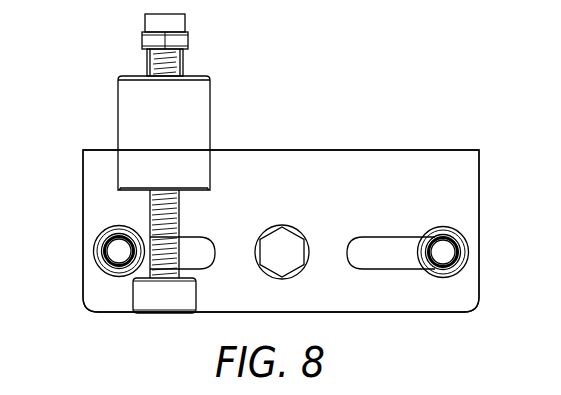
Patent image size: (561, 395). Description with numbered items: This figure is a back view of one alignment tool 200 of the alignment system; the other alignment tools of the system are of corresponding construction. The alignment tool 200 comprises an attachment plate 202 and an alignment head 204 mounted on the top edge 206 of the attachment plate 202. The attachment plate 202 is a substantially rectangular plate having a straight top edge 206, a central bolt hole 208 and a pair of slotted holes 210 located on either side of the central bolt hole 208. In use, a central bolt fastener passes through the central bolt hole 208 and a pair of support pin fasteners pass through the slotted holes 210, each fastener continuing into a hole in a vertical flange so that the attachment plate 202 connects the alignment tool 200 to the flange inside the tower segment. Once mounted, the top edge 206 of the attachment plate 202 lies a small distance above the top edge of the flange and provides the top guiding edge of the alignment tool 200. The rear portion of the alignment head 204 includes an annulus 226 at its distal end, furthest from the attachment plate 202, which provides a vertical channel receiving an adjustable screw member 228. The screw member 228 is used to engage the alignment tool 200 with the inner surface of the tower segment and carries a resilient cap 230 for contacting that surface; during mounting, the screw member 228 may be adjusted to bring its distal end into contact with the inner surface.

The alignment tool 200 is at (422, 80).
The attachment plate 202 is at (351, 150).
The alignment head 204 is at (224, 93).
The top edge 206 is at (457, 149).
The central bolt hole 208 is at (282, 238).
The slotted holes 210 is at (207, 257).
The annulus 226 is at (128, 110).
The screw member 228 is at (175, 212).
The resilient cap 230 is at (163, 305).